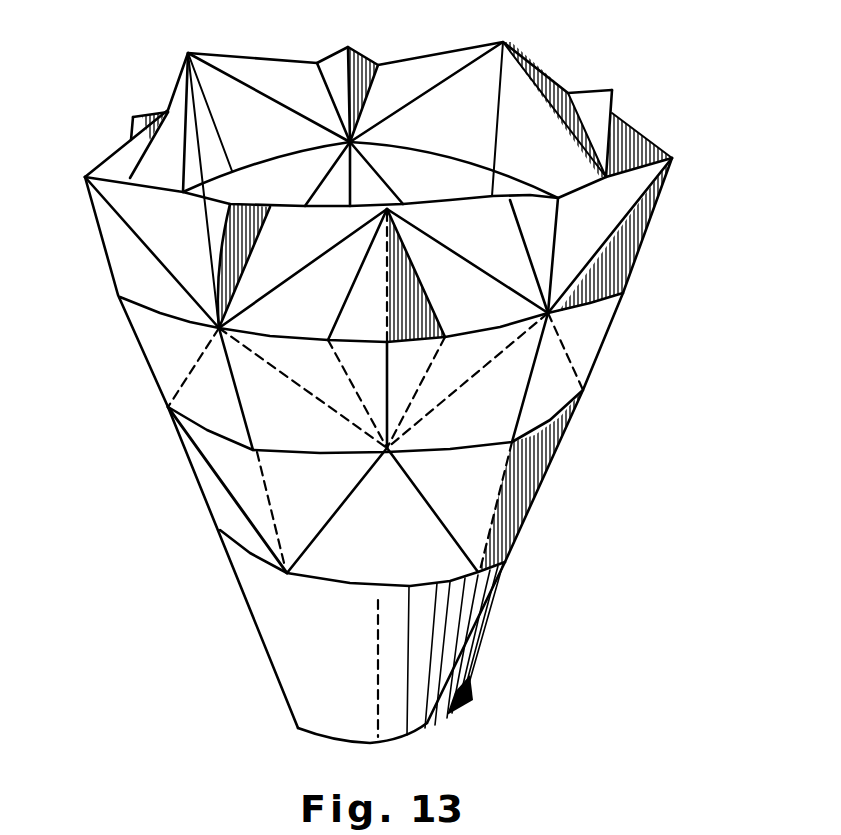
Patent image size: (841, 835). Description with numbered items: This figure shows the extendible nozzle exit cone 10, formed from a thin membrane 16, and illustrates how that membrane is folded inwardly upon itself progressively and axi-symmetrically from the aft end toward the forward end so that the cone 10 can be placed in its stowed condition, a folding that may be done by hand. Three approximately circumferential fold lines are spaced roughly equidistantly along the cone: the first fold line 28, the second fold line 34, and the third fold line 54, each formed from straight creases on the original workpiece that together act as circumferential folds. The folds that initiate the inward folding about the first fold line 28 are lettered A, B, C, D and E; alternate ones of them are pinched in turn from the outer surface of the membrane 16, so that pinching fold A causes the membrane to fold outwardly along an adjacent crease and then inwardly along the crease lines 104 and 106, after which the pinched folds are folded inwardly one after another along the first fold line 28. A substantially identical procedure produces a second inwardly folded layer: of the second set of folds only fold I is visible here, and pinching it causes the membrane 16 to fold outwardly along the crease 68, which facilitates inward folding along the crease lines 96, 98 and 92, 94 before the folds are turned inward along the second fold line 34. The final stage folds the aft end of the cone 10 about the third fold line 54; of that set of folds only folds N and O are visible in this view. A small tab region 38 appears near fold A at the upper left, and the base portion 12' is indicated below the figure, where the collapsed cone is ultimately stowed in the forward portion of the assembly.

The extendible nozzle exit cone 10 is at (612, 371).
The membrane 16 is at (438, 62).
The first approximately circumferential fold line 28 is at (271, 335).
The second approximately circumferential fold line 34 is at (267, 450).
The tab 38 is at (130, 138).
The third approximately circumferential fold line 54 is at (337, 583).
The crease 68 is at (406, 365).
The crease line 92 is at (449, 400).
The crease line 94 is at (316, 400).
The crease line 96 is at (428, 380).
The crease line 98 is at (346, 377).
The crease line 104 is at (162, 113).
The crease line 106 is at (139, 167).
The base portion 12' is at (117, 814).
The fold A is at (133, 117).
The fold B is at (347, 45).
The fold C is at (612, 90).
The fold D is at (557, 222).
The fold E is at (231, 230).
The fold I is at (385, 357).
The fold N is at (502, 475).
The fold O is at (267, 486).